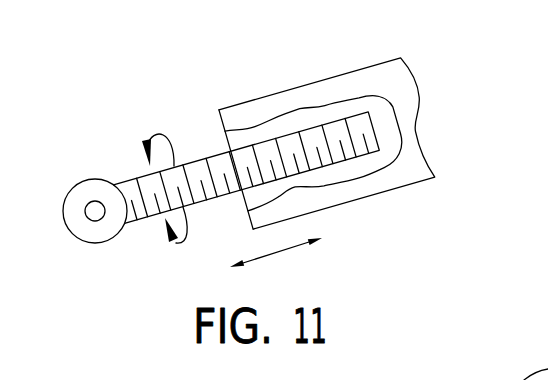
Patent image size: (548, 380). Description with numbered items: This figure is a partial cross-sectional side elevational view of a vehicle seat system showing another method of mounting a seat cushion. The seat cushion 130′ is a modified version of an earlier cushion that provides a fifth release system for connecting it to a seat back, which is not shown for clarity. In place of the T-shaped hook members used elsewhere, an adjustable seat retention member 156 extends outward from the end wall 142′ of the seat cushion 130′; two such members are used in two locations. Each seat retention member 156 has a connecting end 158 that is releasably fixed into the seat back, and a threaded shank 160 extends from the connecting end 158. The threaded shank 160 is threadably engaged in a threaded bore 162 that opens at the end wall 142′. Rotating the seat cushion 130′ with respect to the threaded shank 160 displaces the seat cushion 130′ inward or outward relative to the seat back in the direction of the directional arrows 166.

The seat cushion 130′ is at (360, 73).
The end wall 142′ is at (199, 110).
The adjustable seat retention member 156 is at (112, 135).
The connecting end 158 is at (103, 228).
The threaded shank 160 is at (197, 161).
The threaded bore 162 is at (288, 137).
The directional arrows 166 is at (277, 252).